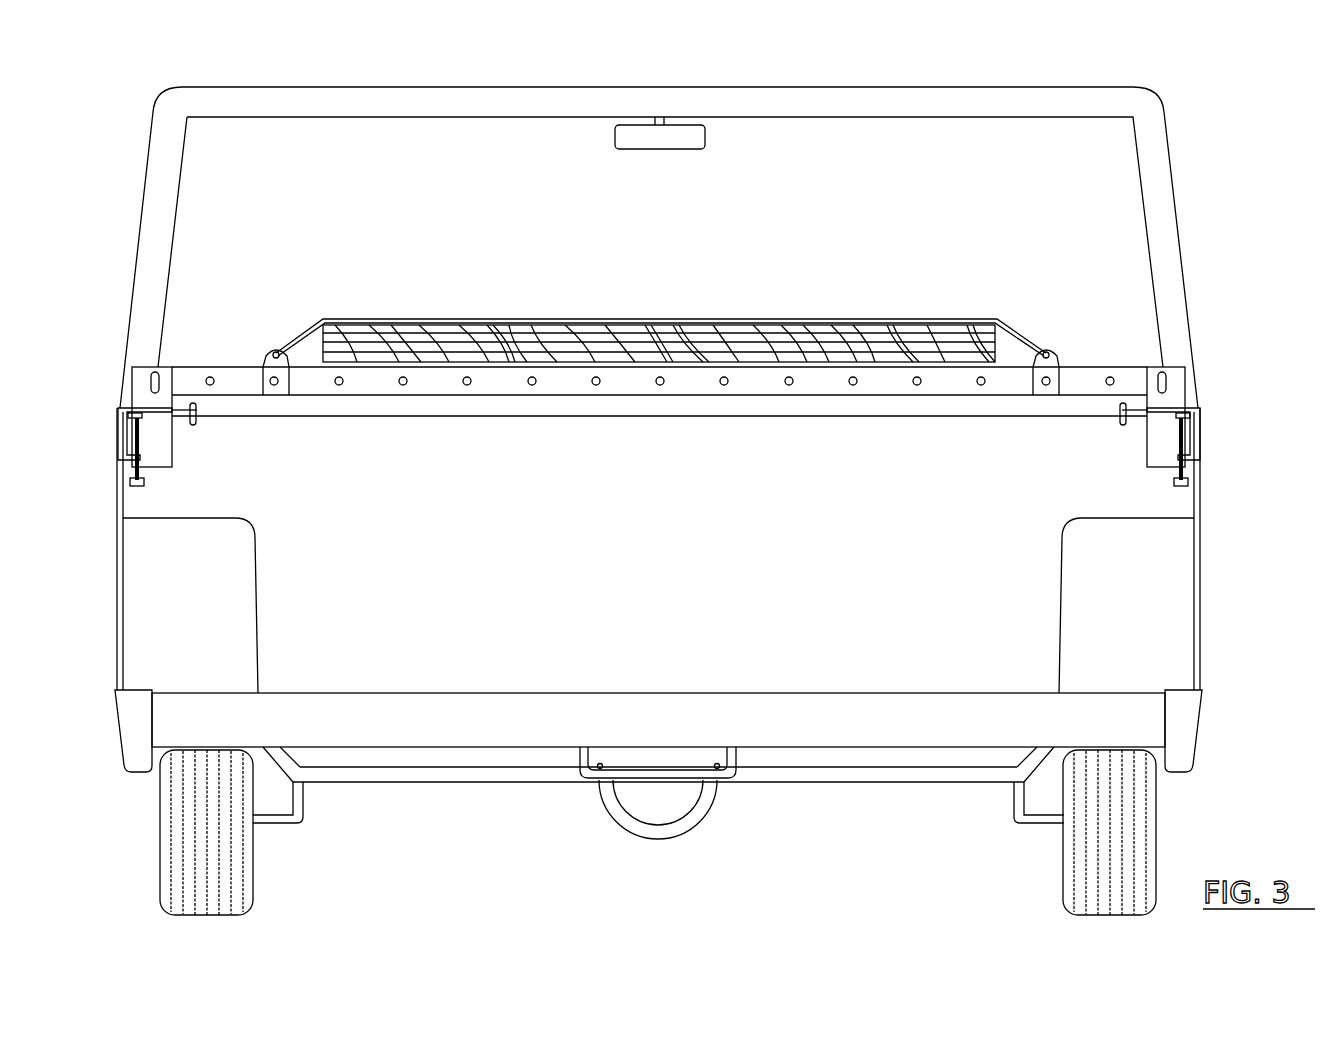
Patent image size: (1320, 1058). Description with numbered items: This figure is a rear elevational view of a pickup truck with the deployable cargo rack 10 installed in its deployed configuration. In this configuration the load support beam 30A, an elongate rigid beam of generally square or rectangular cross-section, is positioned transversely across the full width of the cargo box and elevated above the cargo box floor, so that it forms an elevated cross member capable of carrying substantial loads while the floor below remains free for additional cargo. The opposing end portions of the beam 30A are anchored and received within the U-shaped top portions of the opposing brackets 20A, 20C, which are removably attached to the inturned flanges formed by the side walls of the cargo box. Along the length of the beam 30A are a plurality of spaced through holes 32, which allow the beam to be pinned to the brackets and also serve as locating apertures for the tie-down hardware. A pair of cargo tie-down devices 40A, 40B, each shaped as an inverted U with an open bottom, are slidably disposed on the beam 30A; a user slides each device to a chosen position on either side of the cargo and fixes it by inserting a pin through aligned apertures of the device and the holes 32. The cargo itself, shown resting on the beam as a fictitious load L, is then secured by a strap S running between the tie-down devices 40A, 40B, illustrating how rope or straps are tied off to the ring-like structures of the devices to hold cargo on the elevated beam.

The deployable cargo rack 10 is at (541, 481).
The bracket 20A is at (163, 440).
The bracket 20C is at (1183, 460).
The load support beam 30A is at (750, 385).
The through holes 32 is at (599, 385).
The cargo tie-down device 40A is at (283, 390).
The cargo tie-down device 40B is at (1040, 390).
The lumber L is at (683, 340).
The strap S is at (838, 320).